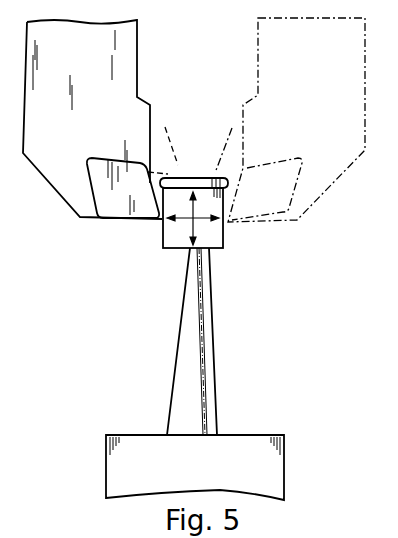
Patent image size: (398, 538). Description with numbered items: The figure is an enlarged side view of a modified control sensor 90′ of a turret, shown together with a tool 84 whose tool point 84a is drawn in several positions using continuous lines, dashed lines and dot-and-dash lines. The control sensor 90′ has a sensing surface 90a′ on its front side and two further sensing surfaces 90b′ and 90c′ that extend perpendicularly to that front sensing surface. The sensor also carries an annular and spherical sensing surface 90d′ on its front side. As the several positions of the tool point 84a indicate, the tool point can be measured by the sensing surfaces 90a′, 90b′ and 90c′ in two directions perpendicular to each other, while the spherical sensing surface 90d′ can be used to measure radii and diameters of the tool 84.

The tool 84 is at (67, 177).
The tool point 84a is at (158, 227).
The control sensor 90′ is at (229, 247).
The sensing surface 90a′ is at (197, 176).
The sensing surface 90b′ is at (161, 233).
The sensing surface 90c′ is at (230, 228).
The annular and spherical sensing surface 90d′ is at (148, 186).